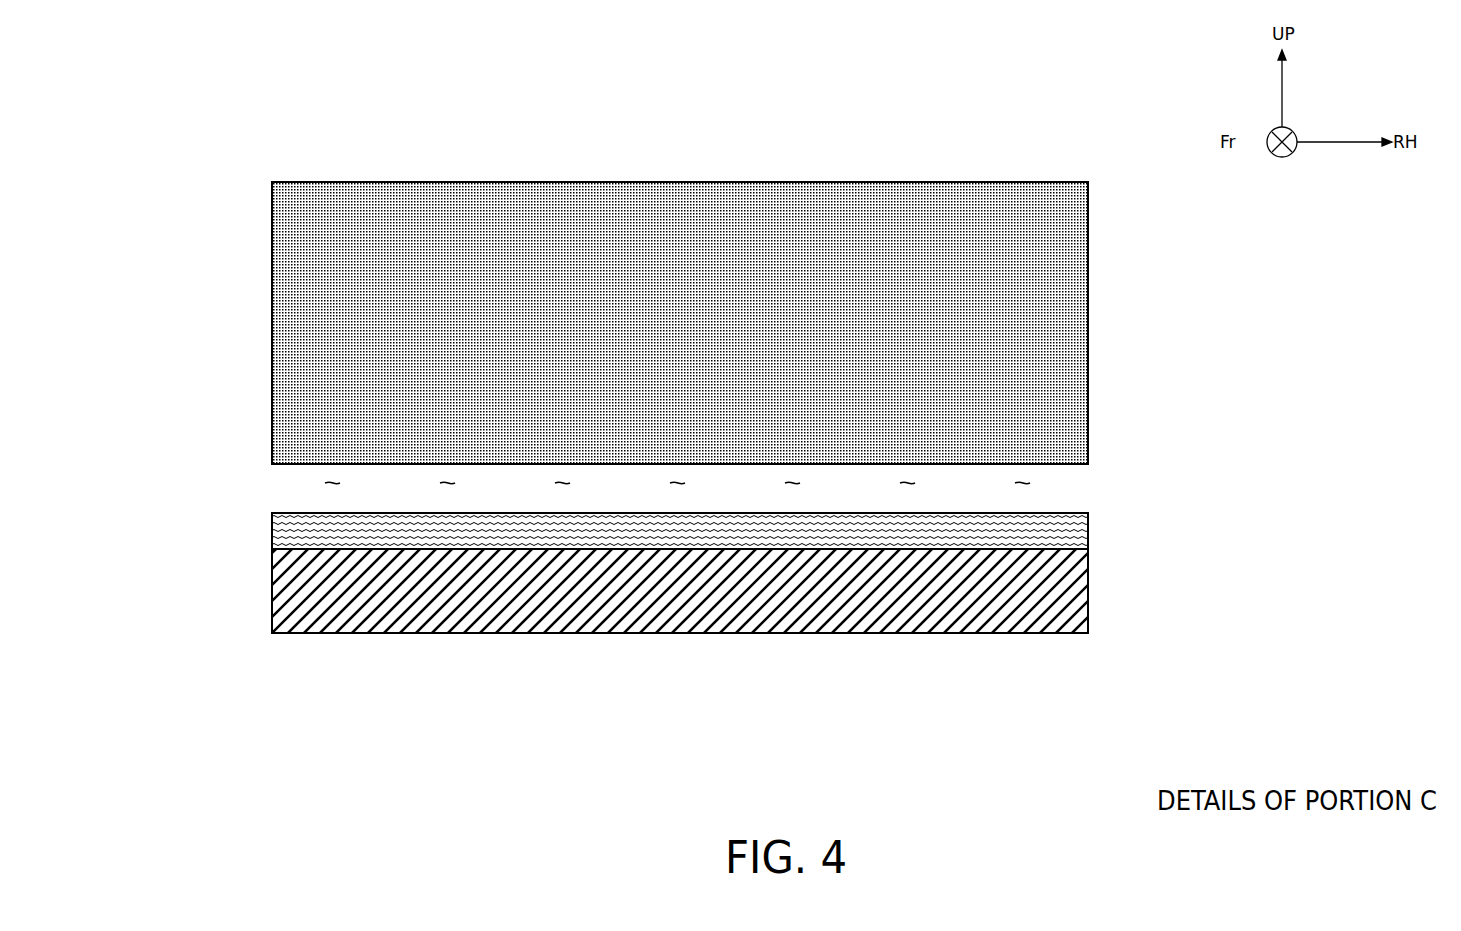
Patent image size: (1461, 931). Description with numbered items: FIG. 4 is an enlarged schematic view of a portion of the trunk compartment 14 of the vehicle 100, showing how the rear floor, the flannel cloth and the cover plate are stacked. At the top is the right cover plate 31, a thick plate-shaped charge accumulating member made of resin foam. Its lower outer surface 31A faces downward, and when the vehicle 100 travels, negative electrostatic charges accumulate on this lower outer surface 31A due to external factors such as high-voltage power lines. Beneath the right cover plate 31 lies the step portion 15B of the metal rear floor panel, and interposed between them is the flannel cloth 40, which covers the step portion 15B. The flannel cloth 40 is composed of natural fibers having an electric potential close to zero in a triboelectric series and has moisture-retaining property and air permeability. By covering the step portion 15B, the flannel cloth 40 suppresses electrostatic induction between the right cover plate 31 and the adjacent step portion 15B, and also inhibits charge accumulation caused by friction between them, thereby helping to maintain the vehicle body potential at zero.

The vehicle 100 is at (158, 250).
The trunk compartment 14 is at (648, 160).
The right cover plate 31 is at (1088, 322).
The lower outer surface of the right cover plate 31A is at (1053, 464).
The flannel cloth 40 is at (1088, 534).
The step portion 15B is at (1088, 603).